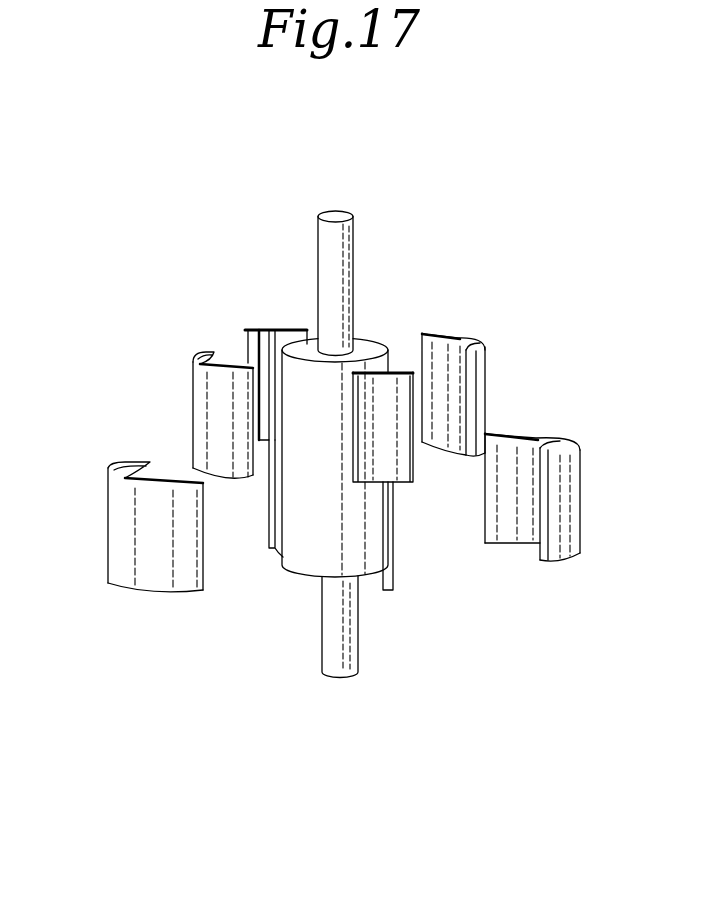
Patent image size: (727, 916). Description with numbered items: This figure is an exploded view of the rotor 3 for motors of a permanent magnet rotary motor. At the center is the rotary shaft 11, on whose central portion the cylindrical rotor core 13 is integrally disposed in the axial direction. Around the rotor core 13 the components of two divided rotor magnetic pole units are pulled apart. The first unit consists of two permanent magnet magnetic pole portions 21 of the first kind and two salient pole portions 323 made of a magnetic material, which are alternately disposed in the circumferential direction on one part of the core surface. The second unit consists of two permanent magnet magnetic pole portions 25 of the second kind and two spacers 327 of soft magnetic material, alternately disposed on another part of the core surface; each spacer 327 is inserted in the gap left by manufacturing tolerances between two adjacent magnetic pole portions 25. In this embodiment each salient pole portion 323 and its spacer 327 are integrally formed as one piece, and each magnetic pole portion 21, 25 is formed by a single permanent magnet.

The rotor for motors 3 is at (218, 322).
The rotary shaft 11 is at (343, 229).
The rotor core 13 is at (368, 346).
The permanent magnet magnetic pole portion of the first kind 21 is at (205, 392).
The permanent magnet magnetic pole portion of the second kind 25 is at (118, 538).
The salient pole portion 323 is at (267, 328).
The spacer 327 is at (271, 550).